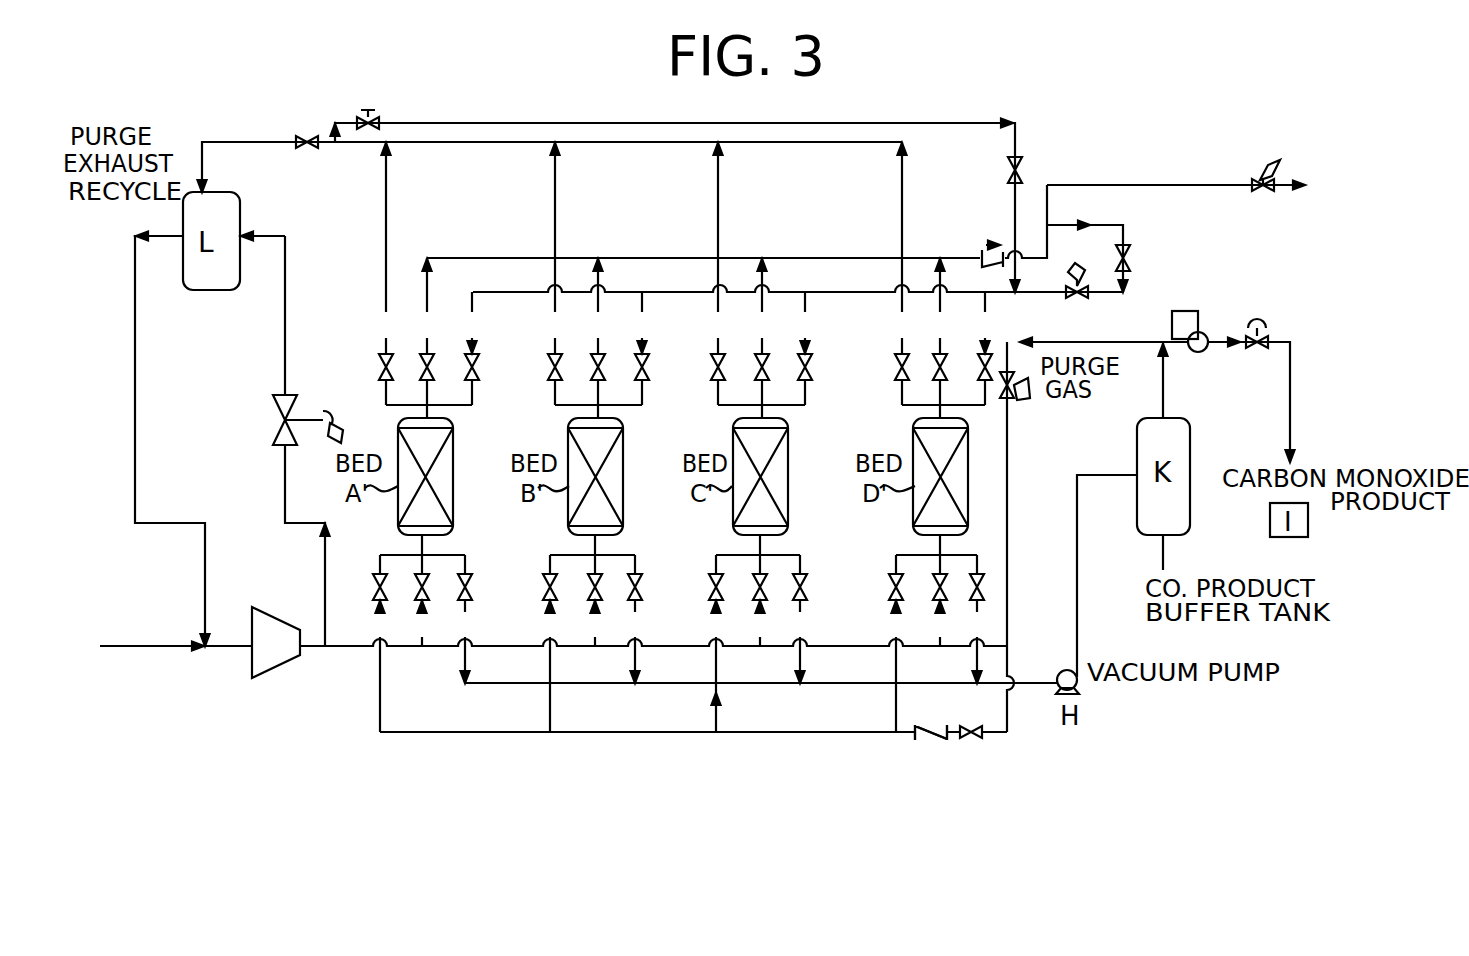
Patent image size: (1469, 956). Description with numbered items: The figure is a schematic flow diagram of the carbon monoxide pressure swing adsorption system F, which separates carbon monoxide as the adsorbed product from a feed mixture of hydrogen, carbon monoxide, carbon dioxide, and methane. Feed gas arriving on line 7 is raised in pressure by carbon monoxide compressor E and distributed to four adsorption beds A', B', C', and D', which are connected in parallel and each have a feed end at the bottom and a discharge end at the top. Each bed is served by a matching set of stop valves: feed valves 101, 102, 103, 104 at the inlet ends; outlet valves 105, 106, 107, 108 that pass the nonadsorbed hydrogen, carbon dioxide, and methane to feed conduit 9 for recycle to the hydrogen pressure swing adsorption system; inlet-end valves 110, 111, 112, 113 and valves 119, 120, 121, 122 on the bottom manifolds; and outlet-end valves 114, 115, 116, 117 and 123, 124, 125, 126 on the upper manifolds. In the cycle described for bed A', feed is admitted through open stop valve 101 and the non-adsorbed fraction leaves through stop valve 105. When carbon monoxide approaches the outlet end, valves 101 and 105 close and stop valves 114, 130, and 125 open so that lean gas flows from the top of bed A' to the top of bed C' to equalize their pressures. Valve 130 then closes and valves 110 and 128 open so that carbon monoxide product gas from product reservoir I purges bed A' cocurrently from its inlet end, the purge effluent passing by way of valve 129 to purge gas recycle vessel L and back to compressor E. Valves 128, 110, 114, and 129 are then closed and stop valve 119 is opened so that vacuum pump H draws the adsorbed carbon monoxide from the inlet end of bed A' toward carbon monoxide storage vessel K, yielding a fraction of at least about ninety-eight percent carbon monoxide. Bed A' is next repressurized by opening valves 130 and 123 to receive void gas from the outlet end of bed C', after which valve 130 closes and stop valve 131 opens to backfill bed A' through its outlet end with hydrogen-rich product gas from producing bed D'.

The feed gas line 7 is at (128, 652).
The feed conduit 9 is at (1137, 185).
The stop valve 101 is at (415, 586).
The stop valve 102 is at (586, 586).
The stop valve 103 is at (770, 586).
The stop valve 104 is at (950, 586).
The stop valve 105 is at (419, 370).
The stop valve 106 is at (590, 370).
The stop valve 107 is at (754, 370).
The stop valve 108 is at (932, 370).
The stop valve 110 is at (370, 585).
The stop valve 111 is at (540, 585).
The stop valve 112 is at (706, 585).
The stop valve 113 is at (905, 586).
The stop valve 114 is at (378, 370).
The stop valve 115 is at (547, 370).
The stop valve 116 is at (710, 370).
The stop valve 117 is at (894, 370).
The stop valve 119 is at (474, 587).
The stop valve 120 is at (644, 587).
The stop valve 121 is at (810, 587).
The stop valve 122 is at (986, 587).
The stop valve 123 is at (481, 370).
The stop valve 124 is at (651, 370).
The stop valve 125 is at (813, 370).
The stop valve 126 is at (977, 370).
The stop valve 128 is at (987, 740).
The stop valve 129 is at (283, 114).
The stop valve 130 is at (1005, 187).
The stop valve 131 is at (1115, 268).